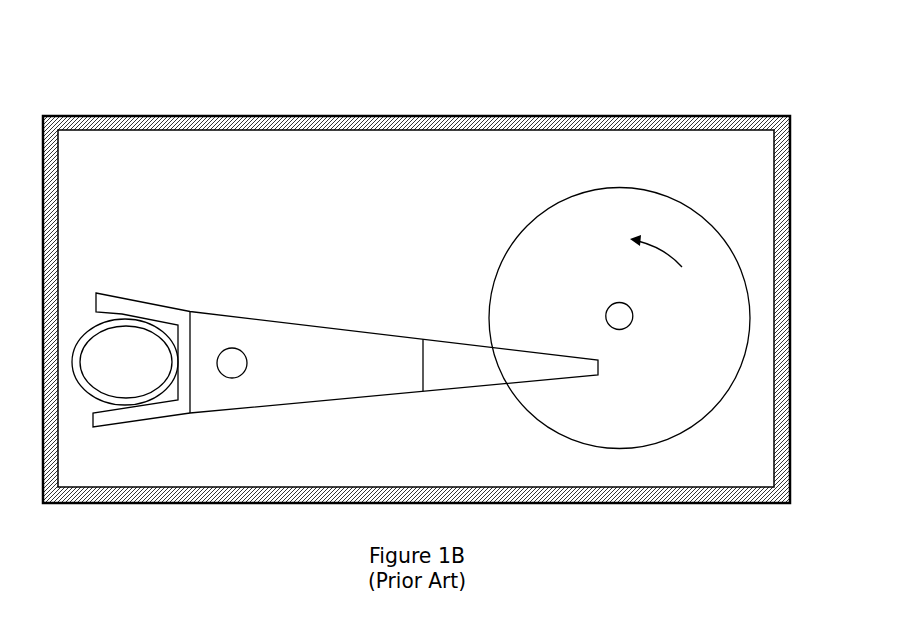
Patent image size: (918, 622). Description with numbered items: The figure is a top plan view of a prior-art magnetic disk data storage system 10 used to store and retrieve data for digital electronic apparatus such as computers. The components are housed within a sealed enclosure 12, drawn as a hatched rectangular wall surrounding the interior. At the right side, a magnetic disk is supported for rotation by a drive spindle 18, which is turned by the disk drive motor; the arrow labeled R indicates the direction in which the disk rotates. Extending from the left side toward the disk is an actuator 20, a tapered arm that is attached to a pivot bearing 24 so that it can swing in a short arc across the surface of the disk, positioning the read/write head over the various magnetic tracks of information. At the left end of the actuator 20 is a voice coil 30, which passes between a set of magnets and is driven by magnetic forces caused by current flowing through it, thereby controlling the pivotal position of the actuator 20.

The magnetic disk data storage system 10 is at (637, 78).
The sealed enclosure 12 is at (313, 116).
The drive spindle 18 is at (610, 302).
The actuator 20 is at (220, 313).
The pivot bearing 24 is at (244, 351).
The voice coil 30 is at (83, 330).